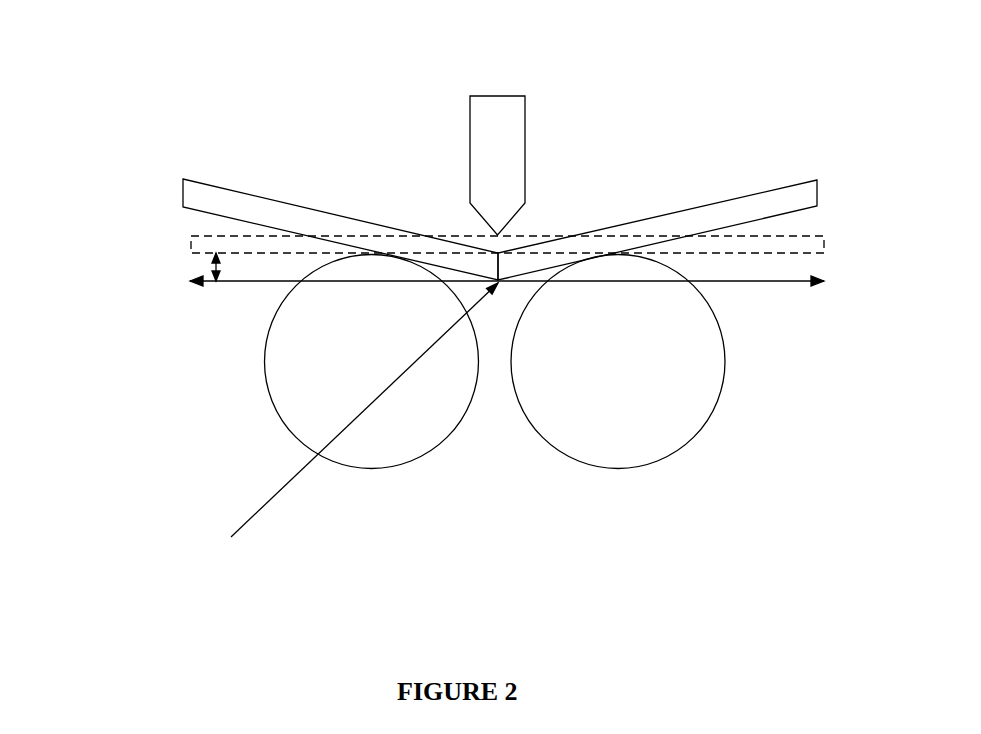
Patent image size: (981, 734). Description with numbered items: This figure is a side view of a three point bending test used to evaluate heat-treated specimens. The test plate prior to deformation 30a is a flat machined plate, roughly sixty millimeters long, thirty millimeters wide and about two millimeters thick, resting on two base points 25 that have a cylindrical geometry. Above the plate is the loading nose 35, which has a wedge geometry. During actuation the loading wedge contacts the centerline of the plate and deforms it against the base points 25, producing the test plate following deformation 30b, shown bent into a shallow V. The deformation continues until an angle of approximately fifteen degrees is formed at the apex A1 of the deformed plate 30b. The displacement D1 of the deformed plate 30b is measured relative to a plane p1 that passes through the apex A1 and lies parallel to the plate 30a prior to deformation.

The loading nose 35 is at (498, 96).
The test plate following deformation 30b is at (775, 207).
The test plate prior to deformation 30a is at (815, 243).
The base points 25 is at (389, 468).
The plane p1 is at (525, 286).
The displacement D1 is at (210, 268).
The apex A1 is at (352, 425).